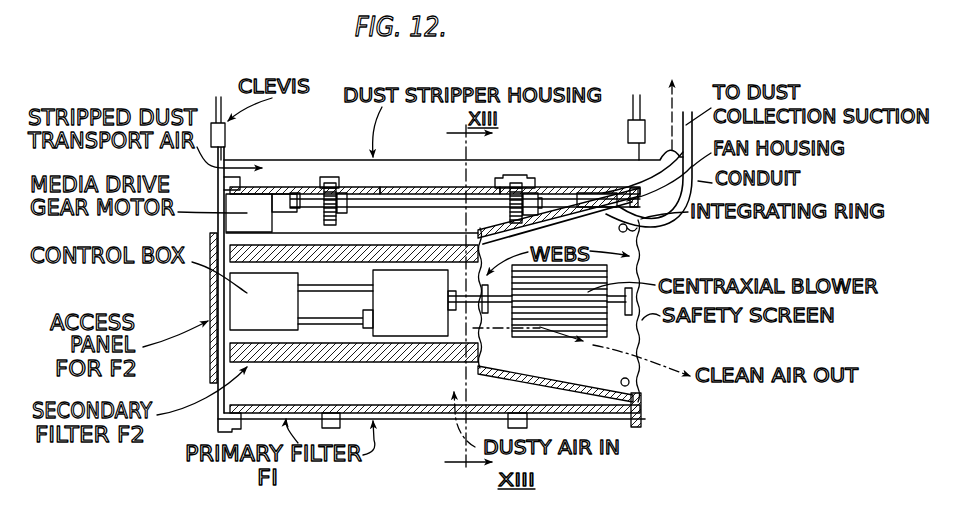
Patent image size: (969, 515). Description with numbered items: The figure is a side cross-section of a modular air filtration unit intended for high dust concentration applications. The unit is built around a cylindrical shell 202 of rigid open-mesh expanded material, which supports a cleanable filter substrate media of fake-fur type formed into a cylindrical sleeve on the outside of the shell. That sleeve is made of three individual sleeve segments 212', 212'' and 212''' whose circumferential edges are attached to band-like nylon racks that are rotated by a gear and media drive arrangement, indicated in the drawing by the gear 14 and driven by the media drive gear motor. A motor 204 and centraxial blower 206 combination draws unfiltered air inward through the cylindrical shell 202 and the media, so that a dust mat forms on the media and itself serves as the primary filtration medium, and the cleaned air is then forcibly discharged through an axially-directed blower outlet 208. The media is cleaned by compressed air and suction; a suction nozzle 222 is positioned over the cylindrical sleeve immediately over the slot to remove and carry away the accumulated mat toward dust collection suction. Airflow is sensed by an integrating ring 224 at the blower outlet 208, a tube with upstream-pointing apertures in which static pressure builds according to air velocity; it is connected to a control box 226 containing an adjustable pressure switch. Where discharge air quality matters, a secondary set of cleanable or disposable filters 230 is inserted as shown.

The drive gear / sprocket 14 is at (352, 157).
The cylindrical shell 202 is at (388, 408).
The motor 204 is at (430, 326).
The centraxial blower 206 is at (642, 341).
The blower outlet 208 is at (659, 263).
The sleeve segment 212' is at (305, 159).
The sleeve segment 212'' is at (440, 161).
The sleeve segment 212''' is at (570, 164).
The suction nozzle 222 is at (515, 172).
The integrating ring 224 is at (647, 238).
The control box 226 is at (247, 308).
The secondary filters 230 is at (344, 363).